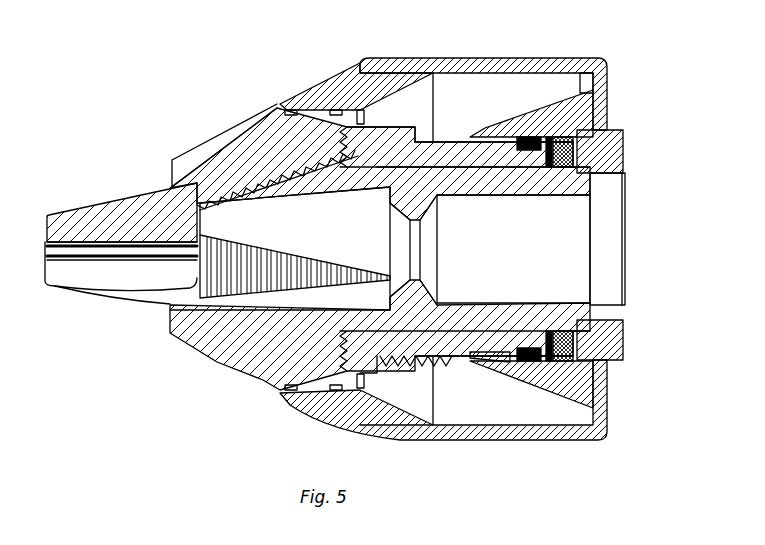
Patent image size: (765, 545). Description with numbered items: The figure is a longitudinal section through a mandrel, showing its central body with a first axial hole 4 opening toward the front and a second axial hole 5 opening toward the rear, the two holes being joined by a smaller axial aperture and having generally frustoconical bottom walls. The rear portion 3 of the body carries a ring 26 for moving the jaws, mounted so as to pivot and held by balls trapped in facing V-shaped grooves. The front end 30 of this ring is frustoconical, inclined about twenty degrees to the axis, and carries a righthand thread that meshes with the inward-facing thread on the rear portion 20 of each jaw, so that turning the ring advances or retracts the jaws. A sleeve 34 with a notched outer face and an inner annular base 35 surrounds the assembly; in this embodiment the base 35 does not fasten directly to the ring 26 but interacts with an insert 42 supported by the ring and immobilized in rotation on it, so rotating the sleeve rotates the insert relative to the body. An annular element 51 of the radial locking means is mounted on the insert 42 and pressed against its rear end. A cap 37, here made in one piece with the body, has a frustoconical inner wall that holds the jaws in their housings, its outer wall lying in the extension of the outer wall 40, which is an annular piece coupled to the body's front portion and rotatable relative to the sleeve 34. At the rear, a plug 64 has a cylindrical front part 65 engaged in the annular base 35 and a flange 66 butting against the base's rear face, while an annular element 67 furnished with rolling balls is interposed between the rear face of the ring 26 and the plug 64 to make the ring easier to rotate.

The rear portion of the body 3 is at (594, 180).
The first axial hole 4 is at (323, 233).
The second axial hole 5 is at (519, 252).
The rear portion of the jaw 20 is at (353, 66).
The ring for moving the jaws 26 is at (447, 342).
The front end of the ring 30 is at (456, 140).
The sleeve 34 is at (520, 60).
The inner annular base of the sleeve 35 is at (562, 122).
The cap 37 is at (227, 147).
The outer wall of the sleeve / annular piece 40 is at (325, 88).
The insert 42 is at (483, 354).
The annular element of the radial locking means 51 is at (537, 365).
The plug 64 is at (623, 148).
The cylindrical front part of the plug 65 is at (587, 120).
The flange of the plug 66 is at (620, 360).
The annular element furnished with rolling balls 67 is at (607, 368).